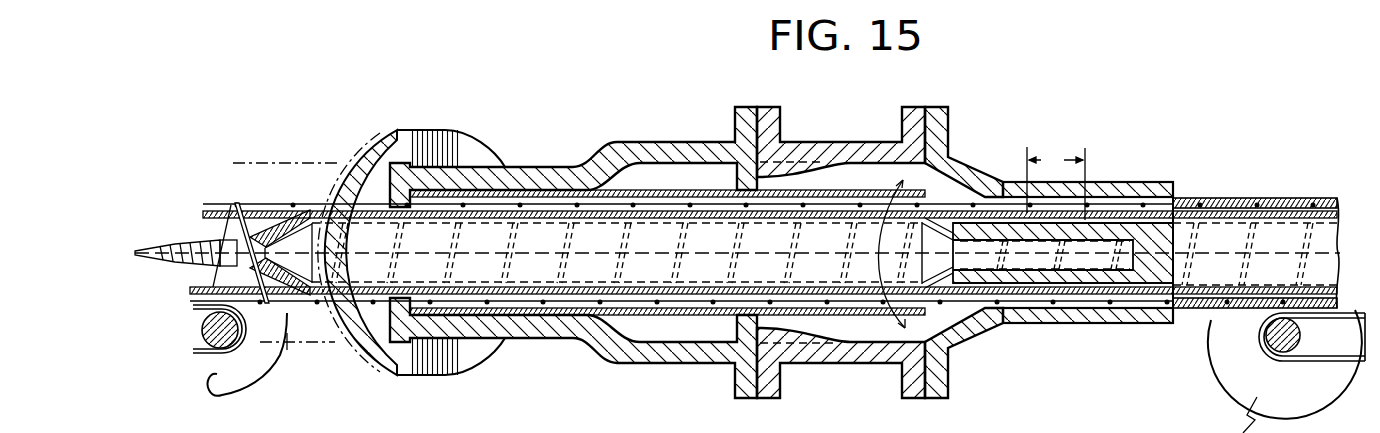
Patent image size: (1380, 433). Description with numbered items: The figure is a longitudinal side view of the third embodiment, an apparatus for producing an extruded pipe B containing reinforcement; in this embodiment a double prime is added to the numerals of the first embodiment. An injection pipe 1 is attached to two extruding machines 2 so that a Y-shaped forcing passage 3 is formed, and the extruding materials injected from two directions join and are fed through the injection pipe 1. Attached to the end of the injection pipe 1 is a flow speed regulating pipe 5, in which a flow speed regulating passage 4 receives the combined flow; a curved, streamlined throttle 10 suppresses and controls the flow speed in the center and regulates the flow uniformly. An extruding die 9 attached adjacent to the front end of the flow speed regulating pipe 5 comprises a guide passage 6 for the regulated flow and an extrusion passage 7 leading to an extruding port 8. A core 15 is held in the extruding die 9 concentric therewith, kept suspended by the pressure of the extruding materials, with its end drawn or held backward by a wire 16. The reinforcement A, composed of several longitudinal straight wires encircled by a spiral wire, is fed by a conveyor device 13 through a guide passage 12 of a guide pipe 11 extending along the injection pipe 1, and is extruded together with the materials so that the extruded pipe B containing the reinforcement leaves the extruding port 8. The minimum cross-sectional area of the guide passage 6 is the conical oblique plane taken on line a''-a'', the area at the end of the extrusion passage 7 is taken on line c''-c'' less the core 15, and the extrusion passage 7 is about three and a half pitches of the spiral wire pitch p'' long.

The injection pipe 1 is at (696, 241).
The extruding machine 2 is at (306, 231).
The forcing passage 3 is at (667, 203).
The flow speed regulating passage 4 is at (841, 225).
The flow speed regulating pipe 5 is at (811, 217).
The guide passage for the regulated flow 6 is at (939, 212).
The extrusion passage 7 is at (1063, 208).
The extruding port 8 is at (1255, 224).
The extruding die 9 is at (1088, 218).
The throttle 10 is at (841, 253).
The guide pipe 11 is at (763, 203).
The guide passage 12 is at (432, 233).
The conveyor device 13 is at (255, 367).
The core 15 is at (1046, 270).
The wire 16 is at (176, 235).
The reinforcement A is at (567, 211).
The extruded pipe B is at (1269, 281).